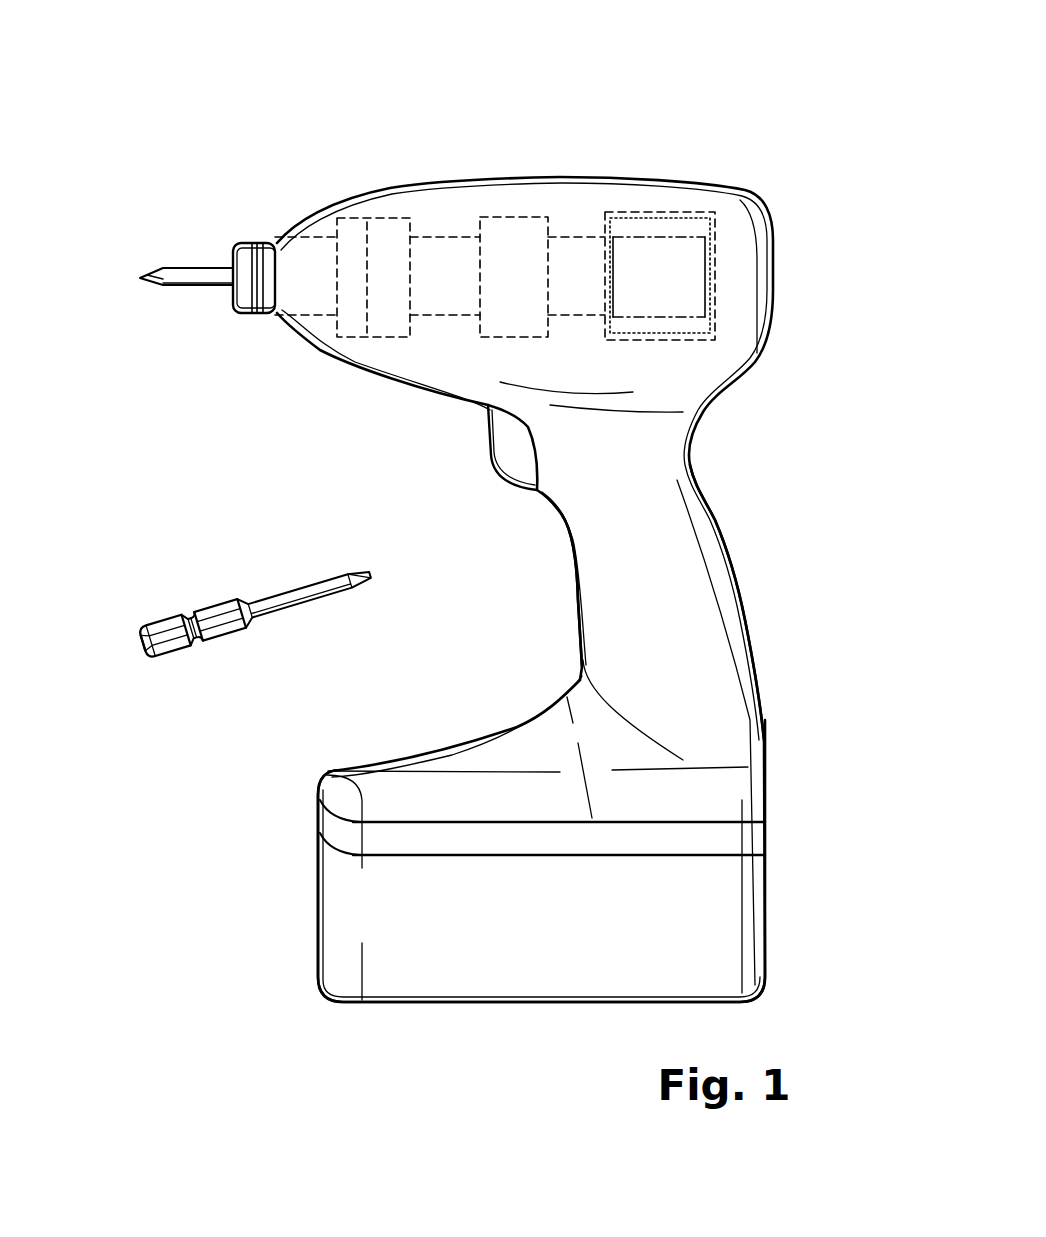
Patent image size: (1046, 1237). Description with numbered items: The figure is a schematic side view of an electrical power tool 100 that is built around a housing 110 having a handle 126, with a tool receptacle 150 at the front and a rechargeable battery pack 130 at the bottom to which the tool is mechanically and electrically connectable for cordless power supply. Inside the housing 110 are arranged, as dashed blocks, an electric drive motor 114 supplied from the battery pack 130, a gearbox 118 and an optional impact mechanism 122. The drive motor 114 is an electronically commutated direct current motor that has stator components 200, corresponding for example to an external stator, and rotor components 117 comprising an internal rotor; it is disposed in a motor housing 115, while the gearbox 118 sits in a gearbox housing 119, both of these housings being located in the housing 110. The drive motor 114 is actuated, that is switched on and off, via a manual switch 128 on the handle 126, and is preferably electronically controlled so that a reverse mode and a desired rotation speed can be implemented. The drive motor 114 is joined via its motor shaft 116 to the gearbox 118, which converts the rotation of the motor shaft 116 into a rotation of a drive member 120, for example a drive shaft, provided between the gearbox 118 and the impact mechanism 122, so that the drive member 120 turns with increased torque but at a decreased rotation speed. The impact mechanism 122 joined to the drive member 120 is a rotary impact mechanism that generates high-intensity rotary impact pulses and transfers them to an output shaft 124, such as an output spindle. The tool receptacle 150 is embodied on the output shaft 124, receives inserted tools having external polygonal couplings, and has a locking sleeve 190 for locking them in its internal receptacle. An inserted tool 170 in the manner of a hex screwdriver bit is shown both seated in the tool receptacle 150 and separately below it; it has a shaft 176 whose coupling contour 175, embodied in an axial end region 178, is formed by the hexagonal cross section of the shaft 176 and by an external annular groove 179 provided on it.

The electrical power tool 100 is at (713, 133).
The housing 110 is at (733, 337).
The electric drive motor 114 is at (690, 267).
The motor housing 115 is at (717, 293).
The motor shaft 116 is at (578, 243).
The rotor components 117 is at (727, 215).
The gearbox 118 is at (517, 233).
The gearbox housing 119 is at (527, 217).
The drive member 120 is at (443, 250).
The impact mechanism 122 is at (385, 233).
The output shaft 124 is at (307, 250).
The handle 126 is at (719, 575).
The manual switch 128 is at (507, 452).
The rechargeable battery pack 130 is at (719, 918).
The tool receptacle 150 is at (220, 248).
The inserted tool 170 is at (212, 580).
The coupling contour 175 is at (260, 662).
The shaft 176 is at (113, 642).
The axial end region 178 is at (100, 690).
The external annular groove 179 is at (183, 668).
The locking sleeve 190 is at (253, 253).
The stator components 200 is at (657, 217).